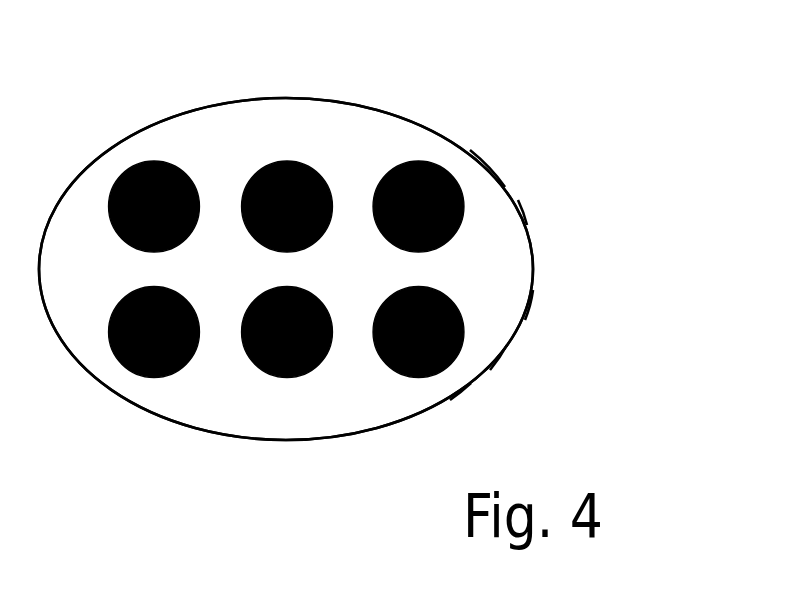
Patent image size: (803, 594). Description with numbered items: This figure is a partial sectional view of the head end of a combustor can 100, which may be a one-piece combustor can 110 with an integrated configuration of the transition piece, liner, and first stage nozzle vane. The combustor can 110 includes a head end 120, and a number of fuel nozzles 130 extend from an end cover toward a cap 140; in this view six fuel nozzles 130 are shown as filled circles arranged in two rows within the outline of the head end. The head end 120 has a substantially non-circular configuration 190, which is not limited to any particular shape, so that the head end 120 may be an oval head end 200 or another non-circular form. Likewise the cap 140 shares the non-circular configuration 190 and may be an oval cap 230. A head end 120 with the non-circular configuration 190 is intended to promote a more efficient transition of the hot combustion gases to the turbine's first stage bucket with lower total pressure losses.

The combustor can 100 is at (472, 91).
The one-piece combustor can 110 is at (477, 155).
The head end 120 is at (505, 187).
The cap 140 is at (527, 225).
The non-circular configuration 190 is at (537, 292).
The oval head end 200 is at (507, 345).
The oval cap 230 is at (471, 383).
The fuel nozzles 130 is at (263, 368).